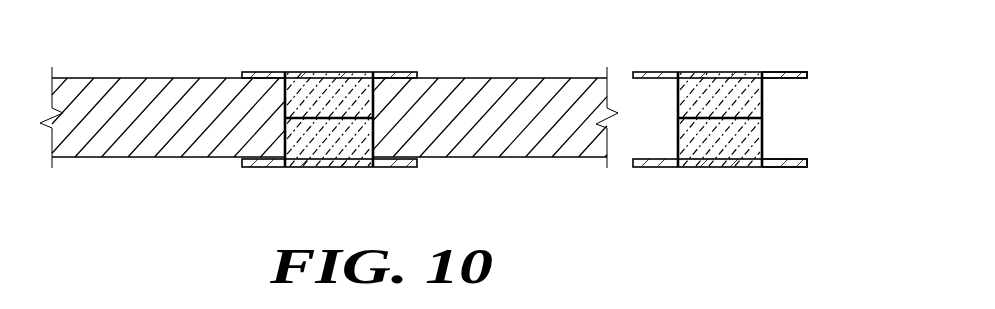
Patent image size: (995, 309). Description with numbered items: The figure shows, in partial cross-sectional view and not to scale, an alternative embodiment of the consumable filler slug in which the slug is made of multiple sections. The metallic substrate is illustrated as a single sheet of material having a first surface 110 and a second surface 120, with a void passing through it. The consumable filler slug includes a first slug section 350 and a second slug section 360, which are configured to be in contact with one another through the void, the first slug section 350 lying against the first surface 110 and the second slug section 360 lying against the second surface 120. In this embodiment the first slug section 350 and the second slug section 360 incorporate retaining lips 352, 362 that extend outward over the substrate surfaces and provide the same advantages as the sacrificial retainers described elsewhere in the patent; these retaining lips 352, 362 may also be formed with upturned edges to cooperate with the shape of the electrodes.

The first surface 110 is at (430, 78).
The second surface 120 is at (430, 157).
The first slug section 350 is at (285, 72).
The second slug section 360 is at (285, 167).
The retaining lip 352 is at (778, 78).
The retaining lip 362 is at (778, 159).